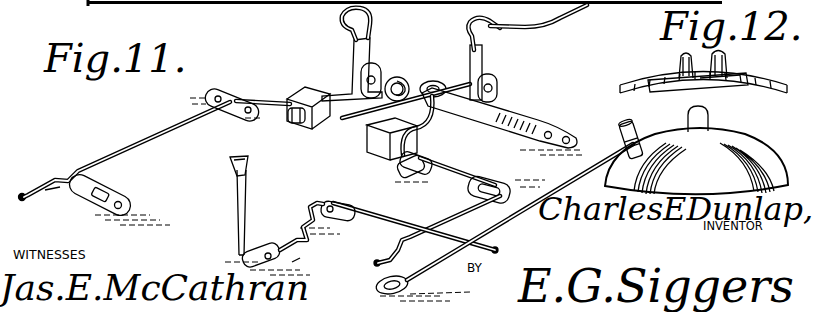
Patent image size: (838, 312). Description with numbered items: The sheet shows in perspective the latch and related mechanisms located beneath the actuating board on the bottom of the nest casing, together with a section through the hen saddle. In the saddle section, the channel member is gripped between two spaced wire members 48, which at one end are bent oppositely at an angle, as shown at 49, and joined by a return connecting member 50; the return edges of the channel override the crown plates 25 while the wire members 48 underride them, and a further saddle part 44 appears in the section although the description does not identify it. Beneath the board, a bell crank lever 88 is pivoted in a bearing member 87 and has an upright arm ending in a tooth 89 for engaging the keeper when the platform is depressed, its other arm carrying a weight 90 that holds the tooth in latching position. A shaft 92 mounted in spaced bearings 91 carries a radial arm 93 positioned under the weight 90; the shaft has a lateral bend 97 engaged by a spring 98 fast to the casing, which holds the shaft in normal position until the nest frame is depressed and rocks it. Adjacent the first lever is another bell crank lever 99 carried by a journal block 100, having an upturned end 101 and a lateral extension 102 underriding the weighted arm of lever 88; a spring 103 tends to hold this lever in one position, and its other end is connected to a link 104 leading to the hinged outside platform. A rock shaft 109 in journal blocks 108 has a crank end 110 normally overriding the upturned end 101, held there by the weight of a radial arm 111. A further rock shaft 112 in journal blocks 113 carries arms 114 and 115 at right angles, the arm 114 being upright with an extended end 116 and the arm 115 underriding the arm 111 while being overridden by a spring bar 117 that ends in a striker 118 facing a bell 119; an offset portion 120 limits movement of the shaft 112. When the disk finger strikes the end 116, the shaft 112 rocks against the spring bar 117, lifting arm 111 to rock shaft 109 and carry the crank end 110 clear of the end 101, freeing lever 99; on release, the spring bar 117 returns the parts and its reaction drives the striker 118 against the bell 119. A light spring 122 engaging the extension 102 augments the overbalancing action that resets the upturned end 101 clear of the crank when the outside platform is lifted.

In FIG. 12, the crown plates 25 is at (624, 83).
In FIG. 12, the post 44 is at (725, 61).
In FIG. 12, the wire members 48 is at (717, 84).
In FIG. 12, the bent portions 49 is at (668, 77).
In FIG. 12, the return connecting member 50 is at (693, 88).
In FIG. 11, the bearing member 87 is at (382, 68).
In FIG. 11, the bell crank lever 88 is at (350, 87).
In FIG. 11, the tooth 89 is at (350, 25).
In FIG. 11, the weight 90 is at (300, 90).
In FIG. 11, the spaced bearings 91 is at (240, 97).
In FIG. 11, the shaft 92 is at (155, 135).
In FIG. 11, the radial arm 93 is at (284, 116).
In FIG. 11, the lateral bend 97 is at (60, 194).
In FIG. 11, the spring 98 is at (97, 186).
In FIG. 11, the bell crank lever 99 is at (490, 68).
In FIG. 11, the journal block 100 is at (498, 89).
In FIG. 11, the upturned end 101 is at (372, 142).
In FIG. 11, the lateral extension 102 is at (368, 114).
In FIG. 11, the spring 103 is at (497, 110).
In FIG. 11, the link 104 is at (565, 20).
In FIG. 11, the journal blocks 108 is at (470, 188).
In FIG. 11, the rock shaft 109 is at (460, 175).
In FIG. 11, the crank end 110 is at (400, 163).
In FIG. 11, the radial arm 111 is at (393, 244).
In FIG. 11, the rock shaft 112 is at (307, 216).
In FIG. 11, the journal blocks 113 is at (265, 245).
In FIG. 11, the arm 114 is at (238, 212).
In FIG. 11, the arm 115 is at (420, 228).
In FIG. 11, the extended end 116 is at (233, 172).
In FIG. 11, the spring bar 117 is at (494, 226).
In FIG. 11, the striker 118 is at (630, 123).
In FIG. 11, the bell 119 is at (696, 150).
In FIG. 11, the offset portion 120 is at (300, 261).
In FIG. 11, the light spring 122 is at (407, 84).